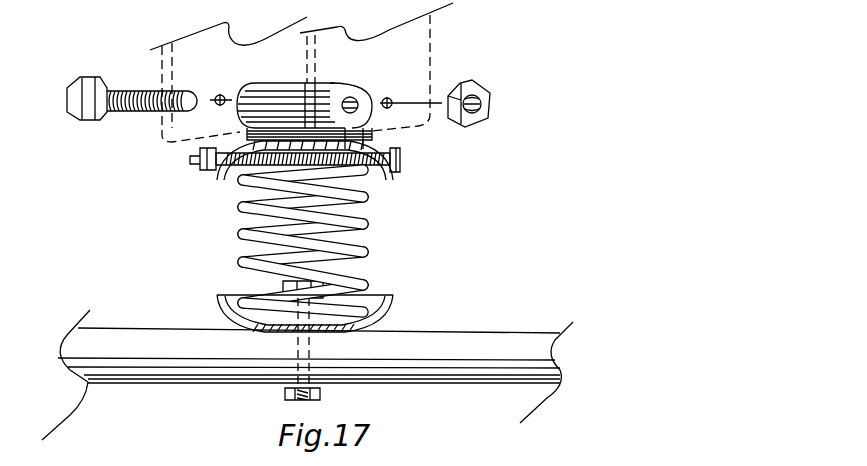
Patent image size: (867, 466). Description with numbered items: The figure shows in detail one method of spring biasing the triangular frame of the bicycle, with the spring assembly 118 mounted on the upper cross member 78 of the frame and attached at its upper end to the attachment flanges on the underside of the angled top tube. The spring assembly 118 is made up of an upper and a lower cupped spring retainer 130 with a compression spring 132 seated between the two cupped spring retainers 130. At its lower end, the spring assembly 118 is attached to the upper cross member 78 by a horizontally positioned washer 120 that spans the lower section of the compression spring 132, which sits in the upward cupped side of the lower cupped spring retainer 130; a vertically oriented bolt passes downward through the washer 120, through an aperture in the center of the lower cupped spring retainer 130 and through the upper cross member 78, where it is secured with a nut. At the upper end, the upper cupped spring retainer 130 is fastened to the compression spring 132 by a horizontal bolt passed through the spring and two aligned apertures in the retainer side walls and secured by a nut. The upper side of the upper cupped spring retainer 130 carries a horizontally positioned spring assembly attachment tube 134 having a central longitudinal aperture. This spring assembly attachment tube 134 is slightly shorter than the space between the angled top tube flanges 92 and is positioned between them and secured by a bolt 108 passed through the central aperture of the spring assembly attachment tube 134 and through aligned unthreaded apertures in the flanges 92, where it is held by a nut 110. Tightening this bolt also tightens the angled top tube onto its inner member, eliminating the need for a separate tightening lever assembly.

The upper cross member 78 is at (508, 342).
The angled top tube flanges 92 is at (193, 43).
The bolt 108 is at (78, 121).
The nut 110 is at (207, 170).
The spring assembly 118 is at (364, 197).
The washer 120 is at (217, 302).
The cupped spring retainer 130 is at (378, 148).
The compression spring 132 is at (366, 255).
The spring assembly attachment tube 134 is at (310, 83).